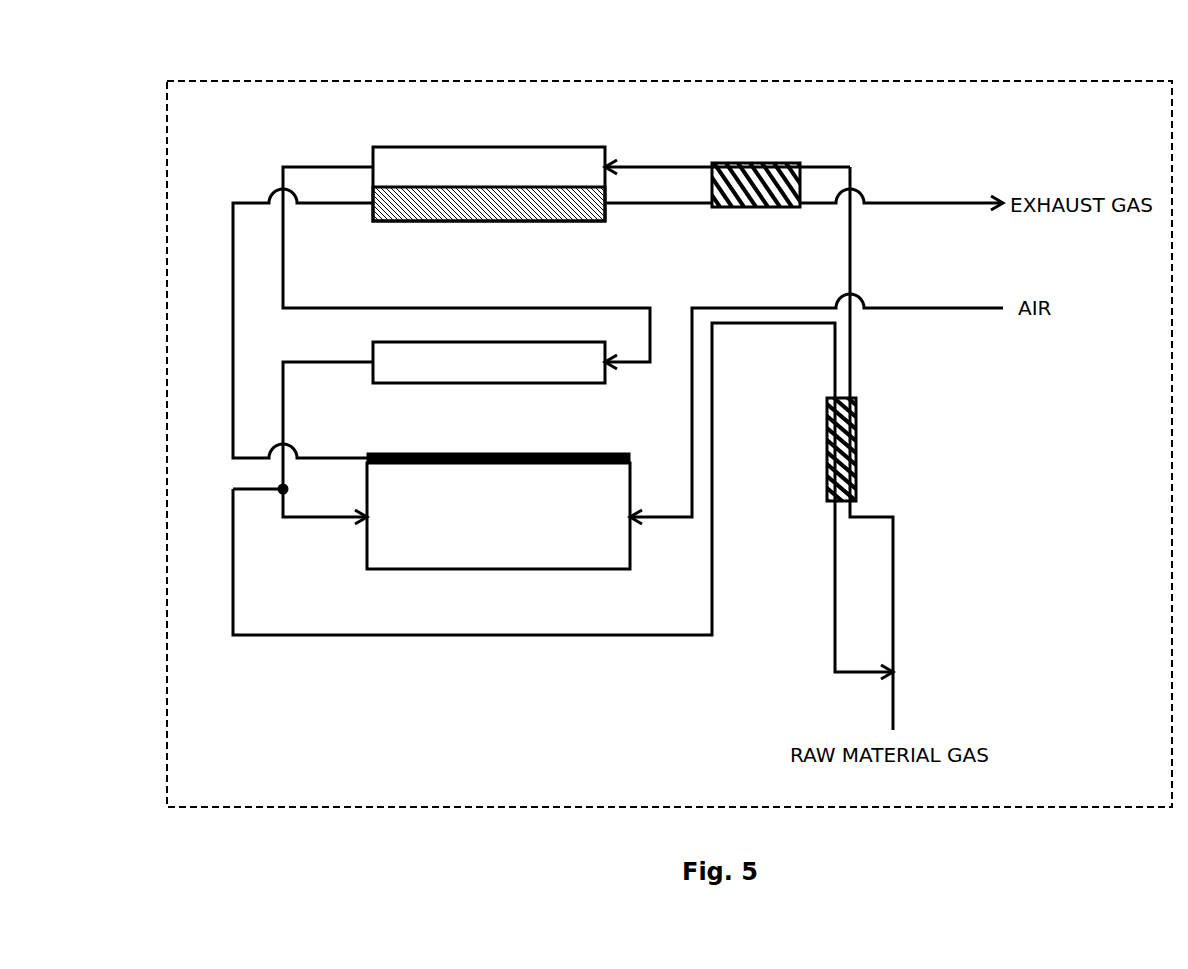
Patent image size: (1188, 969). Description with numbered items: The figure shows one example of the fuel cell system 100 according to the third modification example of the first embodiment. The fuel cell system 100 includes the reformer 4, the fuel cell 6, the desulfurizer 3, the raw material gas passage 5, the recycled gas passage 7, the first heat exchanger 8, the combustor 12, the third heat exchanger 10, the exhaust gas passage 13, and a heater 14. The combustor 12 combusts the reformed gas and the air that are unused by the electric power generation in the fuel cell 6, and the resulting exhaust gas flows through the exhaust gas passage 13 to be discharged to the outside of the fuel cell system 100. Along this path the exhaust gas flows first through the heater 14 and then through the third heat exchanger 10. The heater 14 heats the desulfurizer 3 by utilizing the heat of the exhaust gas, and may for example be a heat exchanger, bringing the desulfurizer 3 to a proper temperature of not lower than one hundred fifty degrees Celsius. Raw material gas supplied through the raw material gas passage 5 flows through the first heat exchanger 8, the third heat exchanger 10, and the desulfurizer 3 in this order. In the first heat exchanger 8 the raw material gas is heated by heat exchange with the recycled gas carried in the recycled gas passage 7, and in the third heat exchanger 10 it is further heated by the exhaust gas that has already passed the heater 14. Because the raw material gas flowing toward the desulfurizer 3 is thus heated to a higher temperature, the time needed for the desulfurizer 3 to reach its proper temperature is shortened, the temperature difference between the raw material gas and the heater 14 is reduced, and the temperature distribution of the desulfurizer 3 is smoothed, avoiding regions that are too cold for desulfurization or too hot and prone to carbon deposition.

The fuel cell system 100 is at (678, 80).
The desulfurizer 3 is at (487, 183).
The heater 14 is at (542, 222).
The third heat exchanger 10 is at (752, 163).
The exhaust gas passage 13 is at (942, 203).
The reformer 4 is at (489, 362).
The fuel cell 6 is at (498, 483).
The combustor 12 is at (551, 453).
The recycled gas passage 7 is at (578, 636).
The first heat exchanger 8 is at (858, 465).
The raw material gas passage 5 is at (894, 580).